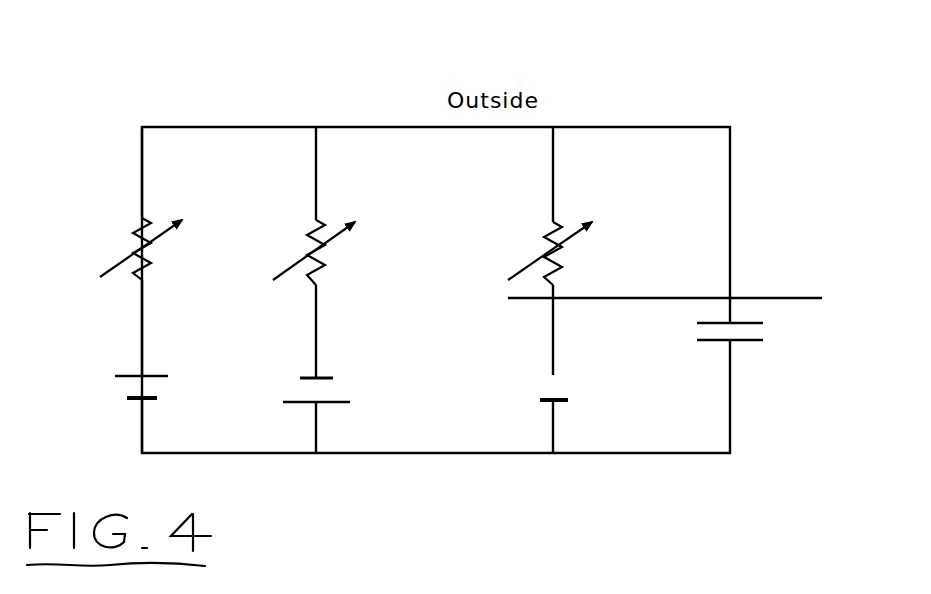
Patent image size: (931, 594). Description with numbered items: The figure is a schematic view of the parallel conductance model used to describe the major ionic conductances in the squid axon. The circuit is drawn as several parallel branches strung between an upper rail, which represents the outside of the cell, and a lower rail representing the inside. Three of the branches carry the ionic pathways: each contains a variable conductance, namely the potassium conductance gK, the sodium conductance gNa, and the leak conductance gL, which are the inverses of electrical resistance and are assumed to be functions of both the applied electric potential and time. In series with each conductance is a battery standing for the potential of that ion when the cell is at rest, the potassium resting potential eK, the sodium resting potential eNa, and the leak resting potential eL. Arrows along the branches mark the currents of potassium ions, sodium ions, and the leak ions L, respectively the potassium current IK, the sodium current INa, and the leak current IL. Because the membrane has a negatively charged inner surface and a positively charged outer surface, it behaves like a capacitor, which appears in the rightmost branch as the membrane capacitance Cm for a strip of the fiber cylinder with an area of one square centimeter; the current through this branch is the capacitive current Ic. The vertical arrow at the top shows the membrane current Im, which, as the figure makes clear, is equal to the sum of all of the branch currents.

The potassium conductance gK is at (113, 251).
The sodium conductance gNa is at (333, 252).
The leak conductance gL is at (565, 253).
The potassium resting potential eK is at (107, 390).
The sodium resting potential eNa is at (338, 393).
The leak resting potential eL is at (580, 400).
The membrane capacitance Cm is at (755, 335).
The potassium current IK is at (111, 141).
The sodium current INa is at (334, 143).
The leak current IL is at (577, 142).
The capacitive current Ic is at (750, 134).
The membrane current Im is at (435, 502).